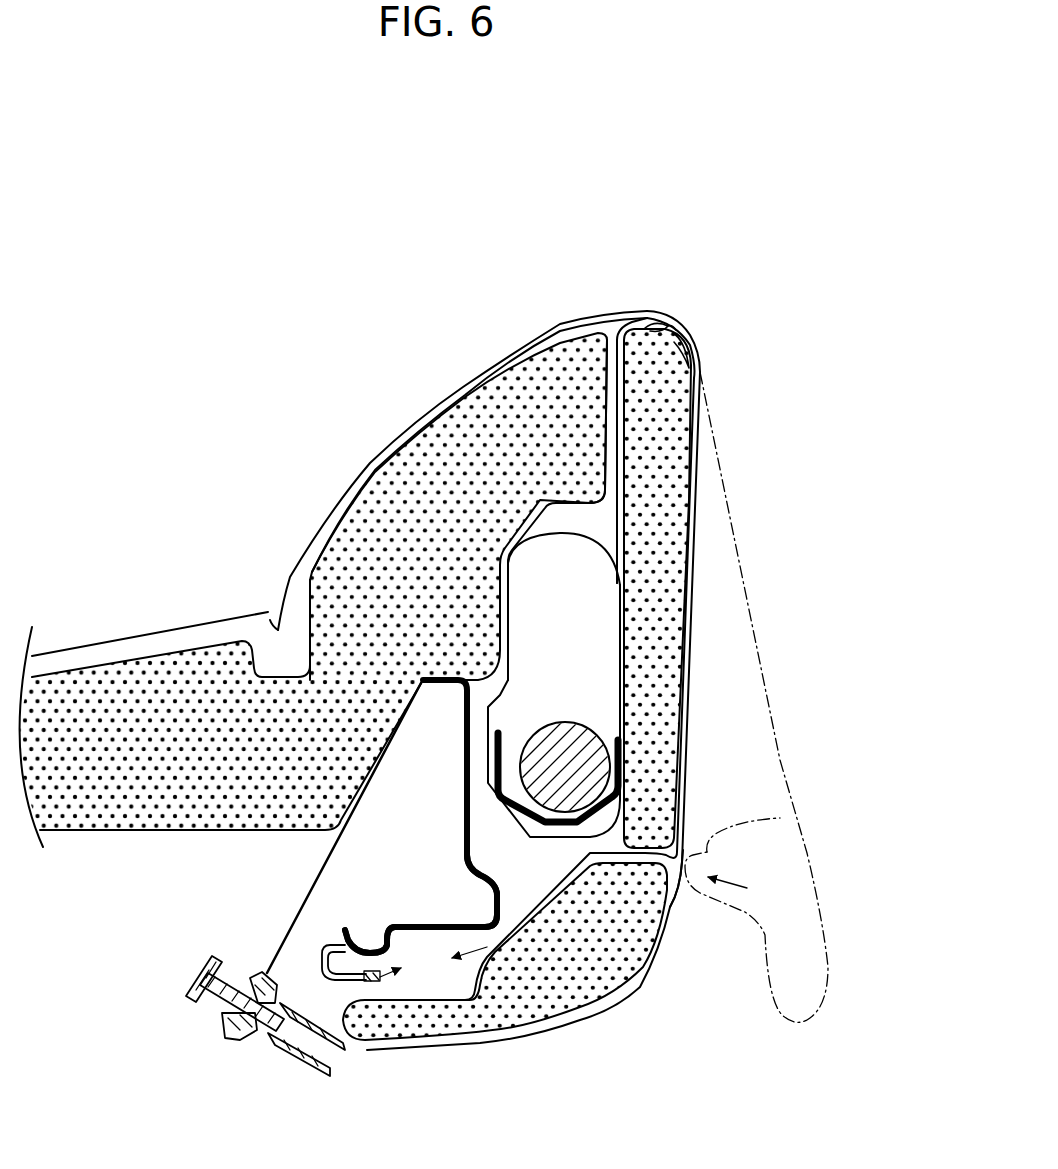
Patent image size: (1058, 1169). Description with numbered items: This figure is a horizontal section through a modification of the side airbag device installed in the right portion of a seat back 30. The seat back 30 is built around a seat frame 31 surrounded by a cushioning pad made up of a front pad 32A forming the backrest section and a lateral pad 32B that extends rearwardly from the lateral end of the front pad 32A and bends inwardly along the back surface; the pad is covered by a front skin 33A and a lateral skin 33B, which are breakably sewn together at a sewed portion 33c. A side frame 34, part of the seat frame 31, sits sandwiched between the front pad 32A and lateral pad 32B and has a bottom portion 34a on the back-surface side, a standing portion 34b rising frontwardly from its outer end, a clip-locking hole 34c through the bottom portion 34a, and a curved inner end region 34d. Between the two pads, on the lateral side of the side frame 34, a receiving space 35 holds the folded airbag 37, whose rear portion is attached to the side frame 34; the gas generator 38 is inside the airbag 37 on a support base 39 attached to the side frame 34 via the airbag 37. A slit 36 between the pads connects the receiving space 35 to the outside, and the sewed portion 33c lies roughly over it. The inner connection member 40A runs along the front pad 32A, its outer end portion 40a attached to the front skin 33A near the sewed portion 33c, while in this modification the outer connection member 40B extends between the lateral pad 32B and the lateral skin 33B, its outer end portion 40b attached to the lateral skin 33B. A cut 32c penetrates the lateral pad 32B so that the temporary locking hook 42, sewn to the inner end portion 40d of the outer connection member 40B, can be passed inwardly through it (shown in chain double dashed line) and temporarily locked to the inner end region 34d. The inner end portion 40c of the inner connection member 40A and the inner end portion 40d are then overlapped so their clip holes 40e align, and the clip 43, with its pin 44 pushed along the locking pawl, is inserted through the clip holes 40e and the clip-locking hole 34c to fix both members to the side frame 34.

The seat back 30 is at (148, 616).
The seat frame 31 is at (511, 911).
The front pad 32A is at (497, 473).
The lateral pad 32B is at (662, 427).
The cut 32c is at (682, 918).
The front skin 33A is at (372, 465).
The lateral skin 33B is at (703, 647).
The sewed portion 33c is at (670, 327).
The side frame 34 is at (465, 817).
The bottom portion 34a is at (379, 940).
The standing portion 34b is at (465, 738).
The clip-locking hole 34c is at (433, 923).
The inner end region 34d is at (345, 938).
The receiving space 35 is at (482, 688).
The slit 36 is at (597, 470).
The airbag 37 is at (600, 543).
The gas generator 38 is at (562, 736).
The support base 39 is at (625, 773).
The inner connection member 40A is at (318, 862).
The outer connection member 40B is at (557, 887).
The outer end portion of inner connection member 40a is at (660, 318).
The outer end portion of outer connection member 40b is at (680, 335).
The inner end portion of inner connection member 40c is at (243, 1047).
The inner end portion of outer connection member 40d is at (389, 975).
The clip hole 40e is at (423, 967).
The temporary locking hook 42 is at (325, 968).
The clip 43 is at (235, 1038).
The pin 44 is at (187, 972).